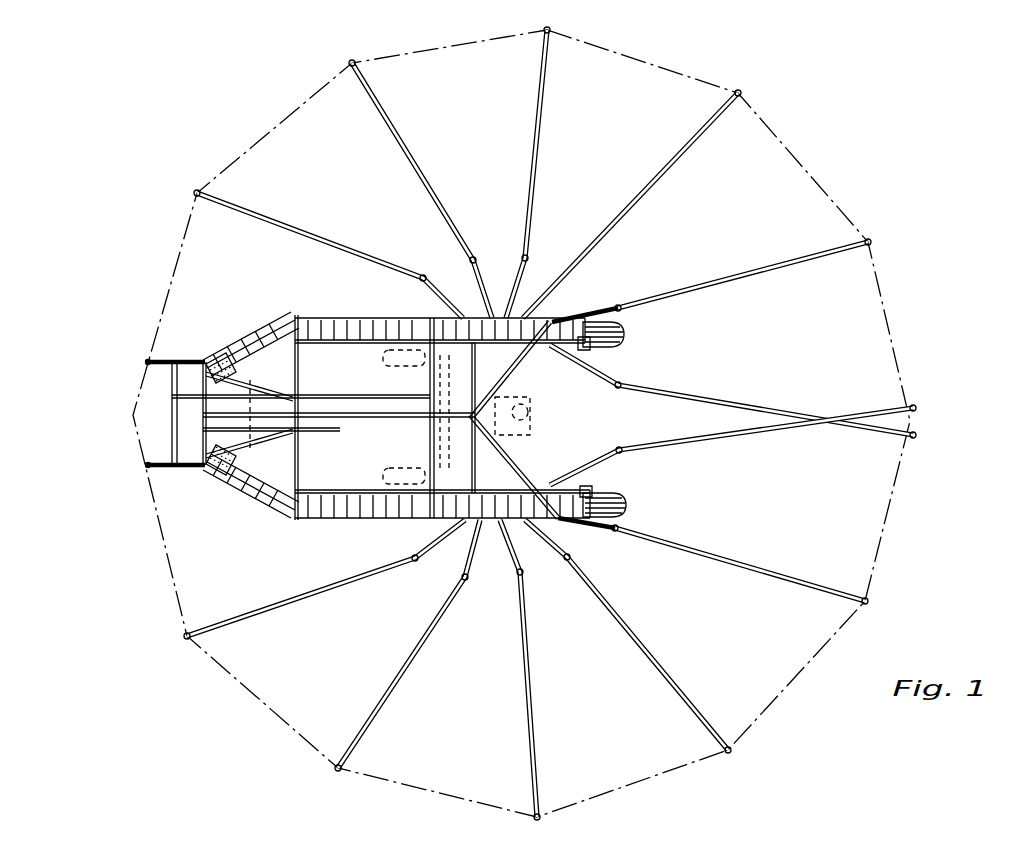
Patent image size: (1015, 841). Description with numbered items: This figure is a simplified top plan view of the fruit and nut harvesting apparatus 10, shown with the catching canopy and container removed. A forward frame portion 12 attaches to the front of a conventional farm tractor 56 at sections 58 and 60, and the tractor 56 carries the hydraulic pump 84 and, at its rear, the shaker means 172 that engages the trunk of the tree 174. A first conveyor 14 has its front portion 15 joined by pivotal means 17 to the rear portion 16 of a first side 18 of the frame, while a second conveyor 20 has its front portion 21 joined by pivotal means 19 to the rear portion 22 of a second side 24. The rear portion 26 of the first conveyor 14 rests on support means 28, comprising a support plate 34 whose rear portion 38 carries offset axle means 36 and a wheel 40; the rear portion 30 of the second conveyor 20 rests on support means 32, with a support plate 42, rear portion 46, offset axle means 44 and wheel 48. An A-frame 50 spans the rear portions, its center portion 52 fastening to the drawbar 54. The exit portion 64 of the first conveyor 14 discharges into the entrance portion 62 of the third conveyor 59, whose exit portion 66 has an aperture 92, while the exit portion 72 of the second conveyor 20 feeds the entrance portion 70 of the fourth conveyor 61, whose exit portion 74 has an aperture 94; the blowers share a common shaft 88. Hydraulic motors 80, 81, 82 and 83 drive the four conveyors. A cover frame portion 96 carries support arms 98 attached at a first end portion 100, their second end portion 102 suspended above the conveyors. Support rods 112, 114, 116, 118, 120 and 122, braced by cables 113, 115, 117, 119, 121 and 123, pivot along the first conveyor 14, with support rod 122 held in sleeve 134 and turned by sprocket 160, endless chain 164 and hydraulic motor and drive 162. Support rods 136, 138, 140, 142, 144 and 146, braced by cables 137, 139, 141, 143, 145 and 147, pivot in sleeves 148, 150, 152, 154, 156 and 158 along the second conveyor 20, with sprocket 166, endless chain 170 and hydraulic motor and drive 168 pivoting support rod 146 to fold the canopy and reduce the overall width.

The fruit and nut harvesting apparatus 10 is at (830, 166).
The forward frame portion 12 is at (122, 274).
The first conveyor 14 is at (378, 519).
The front portion of first conveyor 15 is at (300, 521).
The rear portion of first side 16 is at (253, 505).
The pivotal means 17 is at (286, 540).
The first side of forward frame portion 18 is at (229, 500).
The pivotal means 19 is at (283, 320).
The second conveyor 20 is at (359, 318).
The front portion of second conveyor 21 is at (300, 316).
The rear portion of second side 22 is at (255, 340).
The second side of forward frame portion 24 is at (230, 345).
The rear portion of first conveyor 26 is at (523, 530).
The support means 28 is at (632, 506).
The rear portion of second conveyor 30 is at (540, 296).
The support means 32 is at (634, 331).
The support plate 34 is at (570, 534).
The offset axle means 36 is at (615, 493).
The rear portion of support plate 38 is at (592, 494).
The wheel 40 is at (625, 501).
The support plate 42 is at (572, 318).
The offset axle means 44 is at (612, 345).
The rear portion of support plate 46 is at (586, 347).
The wheel 48 is at (620, 326).
The A-frame 50 is at (475, 429).
The center portion of A-frame 52 is at (449, 418).
The drawbar 54 is at (462, 417).
The conventional farm tractor 56 is at (392, 466).
The section 58 is at (286, 433).
The third conveyor 59 is at (240, 520).
The section 60 is at (200, 396).
The fourth conveyor 61 is at (212, 355).
The entrance portion of third conveyor 62 is at (301, 445).
The exit portion of first conveyor 64 is at (352, 522).
The exit portion of third conveyor 66 is at (205, 478).
The entrance portion of fourth conveyor 70 is at (322, 343).
The exit portion of second conveyor 72 is at (306, 325).
The exit portion of fourth conveyor 74 is at (195, 355).
The hydraulic motor 80 is at (308, 486).
The hydraulic motor 81 is at (328, 349).
The hydraulic motor 82 is at (210, 490).
The hydraulic motor 83 is at (200, 350).
The hydraulic pump 84 is at (200, 429).
The common shaft 88 is at (170, 441).
The aperture 92 is at (226, 490).
The aperture 94 is at (196, 348).
The cover frame portion 96 is at (362, 404).
The support arms 98 is at (200, 381).
The first end portion 100 is at (200, 413).
The second end portion 102 is at (620, 301).
The support rod 112 is at (190, 638).
The cable 113 is at (428, 565).
The support rod 114 is at (342, 766).
The cable 115 is at (461, 580).
The support rod 116 is at (542, 812).
The cable 117 is at (517, 577).
The support rod 118 is at (732, 750).
The cable 119 is at (562, 562).
The support rod 120 is at (868, 600).
The cable 121 is at (630, 530).
The support rod 122 is at (915, 406).
The cable 123 is at (618, 450).
The sleeve 134 is at (610, 469).
The support rod 136 is at (196, 188).
The cable 137 is at (426, 274).
The support rod 138 is at (350, 60).
The cable 139 is at (477, 256).
The support rod 140 is at (550, 34).
The cable 141 is at (524, 252).
The support rod 142 is at (742, 93).
The cable 143 is at (607, 257).
The support rod 144 is at (870, 240).
The cable 145 is at (678, 291).
The support rod 146 is at (915, 437).
The cable 147 is at (622, 383).
The sleeve 148 is at (470, 306).
The sleeve 150 is at (496, 300).
The sleeve 152 is at (537, 265).
The sleeve 154 is at (565, 278).
The sleeve 156 is at (585, 292).
The sleeve 158 is at (560, 362).
The sprocket 160 is at (558, 420).
The hydraulic motor and drive 162 is at (527, 492).
The endless chain 164 is at (530, 438).
The sprocket 166 is at (529, 411).
The hydraulic motor and drive 168 is at (480, 352).
The endless chain 170 is at (527, 350).
The shaker means 172 is at (535, 428).
The tree 174 is at (565, 410).